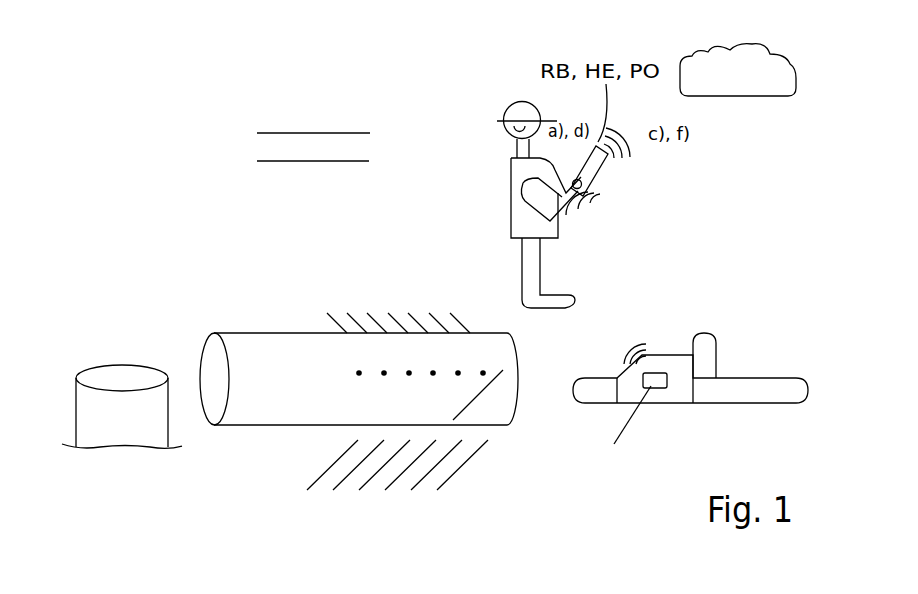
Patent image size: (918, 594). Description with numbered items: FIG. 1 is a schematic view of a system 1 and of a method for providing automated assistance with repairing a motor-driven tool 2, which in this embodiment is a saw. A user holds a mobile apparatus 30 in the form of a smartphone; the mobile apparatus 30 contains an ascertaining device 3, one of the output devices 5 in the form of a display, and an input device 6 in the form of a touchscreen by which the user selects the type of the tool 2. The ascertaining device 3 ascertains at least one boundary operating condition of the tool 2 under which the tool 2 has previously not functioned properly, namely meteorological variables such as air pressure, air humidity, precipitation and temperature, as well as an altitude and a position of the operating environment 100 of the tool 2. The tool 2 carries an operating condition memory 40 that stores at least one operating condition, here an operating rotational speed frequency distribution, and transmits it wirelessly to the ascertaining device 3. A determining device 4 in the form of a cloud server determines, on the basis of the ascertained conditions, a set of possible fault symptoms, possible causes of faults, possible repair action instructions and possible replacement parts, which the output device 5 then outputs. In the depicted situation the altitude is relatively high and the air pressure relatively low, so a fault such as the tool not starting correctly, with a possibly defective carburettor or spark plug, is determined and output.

The operating environment 100 is at (176, 133).
The determining device 4 is at (688, 56).
The ascertaining device 3 is at (650, 175).
The output device 5 is at (650, 175).
The input device 6 is at (650, 175).
The system 1 is at (650, 175).
The mobile apparatus 30 is at (612, 157).
The motor-driven tool 2 is at (678, 404).
The operating condition memory 40 is at (658, 374).